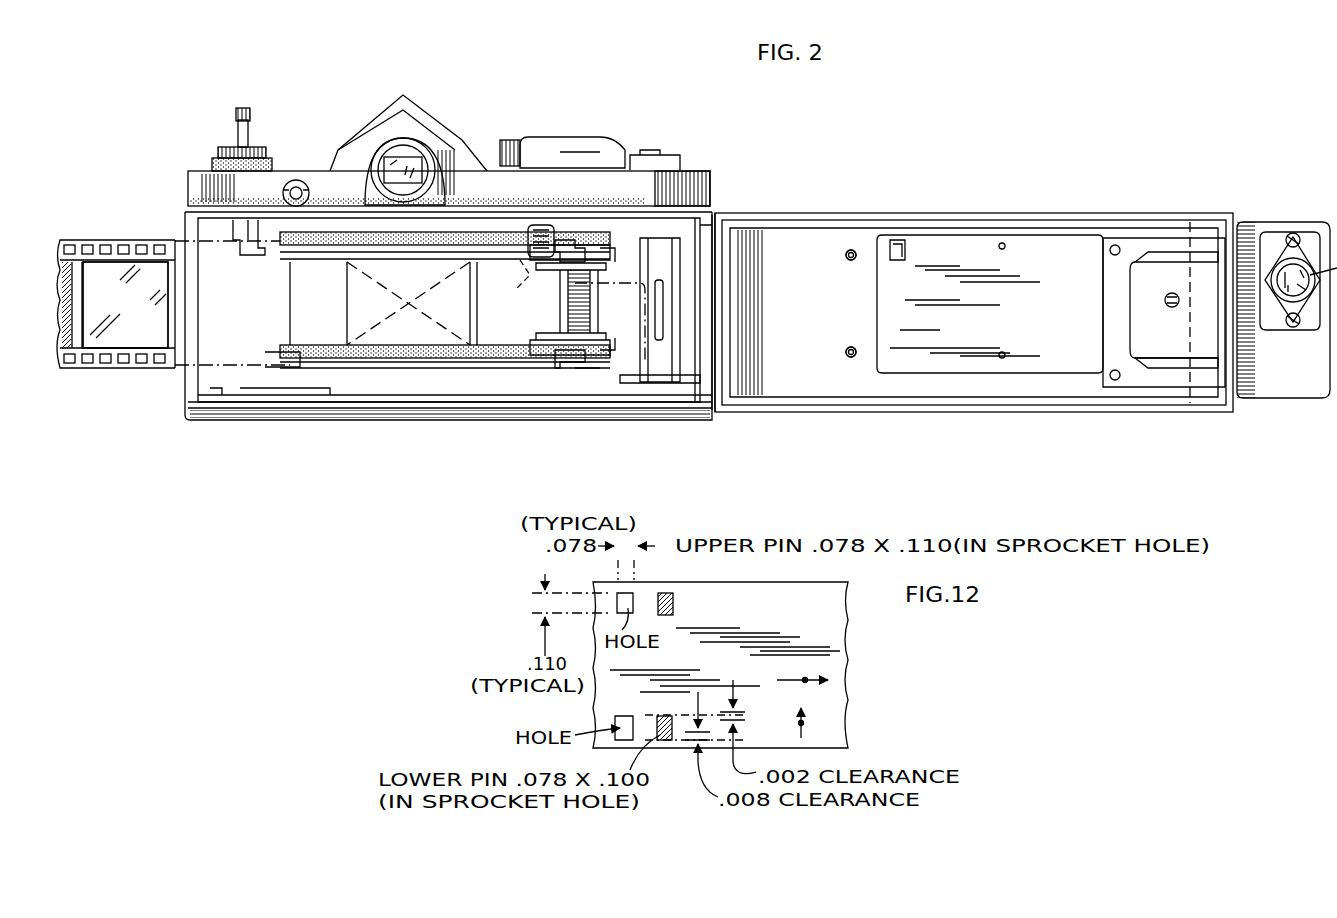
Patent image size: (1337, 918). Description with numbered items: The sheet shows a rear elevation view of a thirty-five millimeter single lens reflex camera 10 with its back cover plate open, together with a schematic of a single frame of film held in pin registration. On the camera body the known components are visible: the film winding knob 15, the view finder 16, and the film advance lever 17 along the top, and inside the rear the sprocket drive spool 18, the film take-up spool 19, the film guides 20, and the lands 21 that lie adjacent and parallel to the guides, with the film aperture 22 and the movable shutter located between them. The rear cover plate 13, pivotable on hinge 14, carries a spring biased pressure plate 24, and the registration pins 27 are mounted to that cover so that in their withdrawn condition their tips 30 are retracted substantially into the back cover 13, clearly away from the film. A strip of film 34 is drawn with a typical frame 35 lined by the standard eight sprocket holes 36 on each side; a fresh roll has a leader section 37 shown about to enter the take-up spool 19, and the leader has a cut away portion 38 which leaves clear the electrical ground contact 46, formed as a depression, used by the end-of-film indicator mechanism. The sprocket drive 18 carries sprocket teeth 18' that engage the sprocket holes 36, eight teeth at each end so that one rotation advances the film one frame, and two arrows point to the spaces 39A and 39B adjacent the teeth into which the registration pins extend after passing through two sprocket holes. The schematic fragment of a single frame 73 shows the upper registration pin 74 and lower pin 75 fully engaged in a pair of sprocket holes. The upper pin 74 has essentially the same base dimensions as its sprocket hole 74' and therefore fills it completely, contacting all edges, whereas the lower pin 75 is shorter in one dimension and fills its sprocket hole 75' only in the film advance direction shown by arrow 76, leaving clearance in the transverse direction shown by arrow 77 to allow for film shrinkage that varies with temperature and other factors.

In FIG. 2, the camera 10 is at (358, 80).
In FIG. 2, the rear cover plate 13 is at (853, 388).
In FIG. 2, the hinge 14 is at (720, 398).
In FIG. 2, the film winding knob 15 is at (240, 130).
In FIG. 2, the view finder 16 is at (430, 118).
In FIG. 2, the film advance lever 17 is at (549, 138).
In FIG. 2, the sprocket drive spool 18 is at (584, 302).
In FIG. 2, the sprocket teeth 18' is at (624, 298).
In FIG. 2, the film take-up spool 19 is at (672, 246).
In FIG. 2, the film guides 20 is at (290, 235).
In FIG. 2, the lands 21 is at (326, 257).
In FIG. 2, the film aperture 22 is at (418, 304).
In FIG. 2, the pressure plate 24 is at (964, 245).
In FIG. 2, the registration pins 27 is at (846, 255).
In FIG. 2, the tips of registration pins 30 is at (819, 303).
In FIG. 2, the strip of film 34 is at (135, 240).
In FIG. 2, the frame 35 is at (132, 330).
In FIG. 2, the sprocket holes 36 is at (87, 245).
In FIG. 2, the leader section 37 is at (650, 335).
In FIG. 2, the cut away portion 38 is at (538, 283).
In FIG. 2, the space adjacent sprocket teeth 39A is at (557, 366).
In FIG. 2, the space adjacent sprocket teeth 39B is at (566, 244).
In FIG. 2, the ground contact 46 is at (532, 234).
In FIG. 12, the single frame of film 73 is at (830, 624).
In FIG. 12, the upper registration pin 74 is at (698, 603).
In FIG. 12, the upper sprocket hole 74' is at (648, 585).
In FIG. 12, the lower registration pin 75 is at (674, 747).
In FIG. 12, the lower sprocket hole 75' is at (644, 714).
In FIG. 12, the film advance direction arrow 76 is at (805, 680).
In FIG. 12, the transverse direction arrow 77 is at (801, 723).